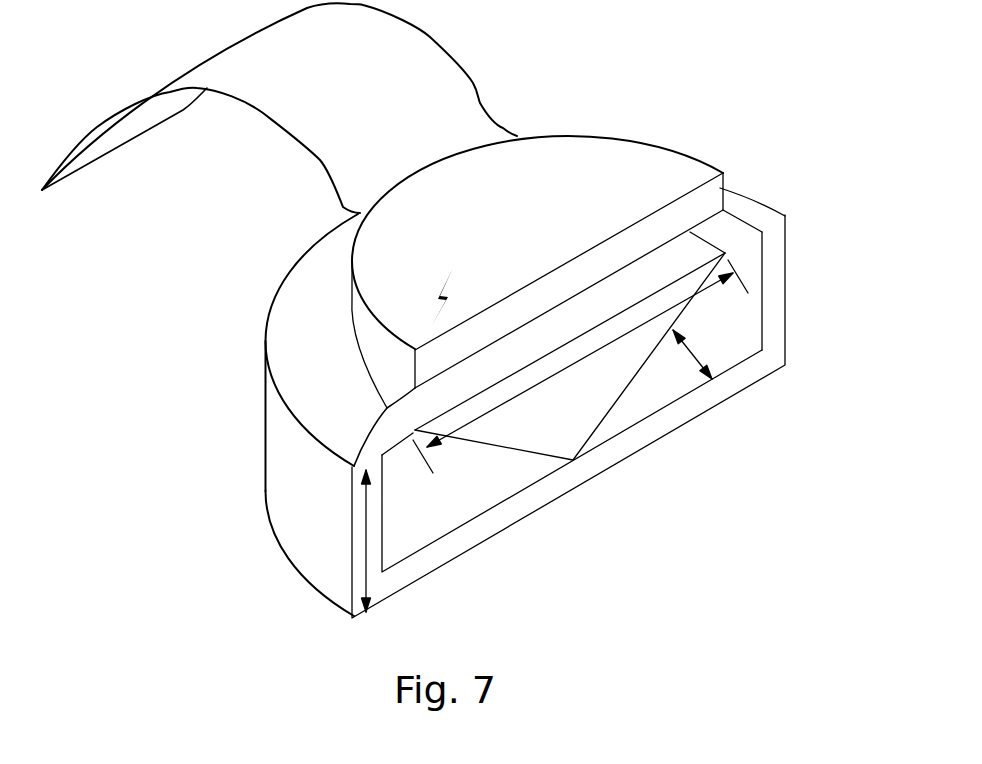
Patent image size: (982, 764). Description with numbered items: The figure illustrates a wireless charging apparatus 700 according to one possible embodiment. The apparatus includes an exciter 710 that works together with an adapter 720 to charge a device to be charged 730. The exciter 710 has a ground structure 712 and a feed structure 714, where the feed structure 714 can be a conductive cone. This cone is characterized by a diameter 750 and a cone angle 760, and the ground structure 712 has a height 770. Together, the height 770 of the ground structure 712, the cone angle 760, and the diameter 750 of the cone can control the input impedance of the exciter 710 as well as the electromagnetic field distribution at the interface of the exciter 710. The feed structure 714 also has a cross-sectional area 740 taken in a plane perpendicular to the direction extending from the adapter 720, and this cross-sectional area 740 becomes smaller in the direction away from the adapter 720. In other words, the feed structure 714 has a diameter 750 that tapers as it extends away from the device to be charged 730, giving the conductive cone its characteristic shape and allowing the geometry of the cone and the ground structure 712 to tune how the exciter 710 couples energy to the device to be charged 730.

The wireless charging apparatus 700 is at (438, 310).
The exciter 710 is at (250, 310).
The ground structure 712 is at (425, 577).
The feed structure 714 is at (497, 440).
The adapter 720 is at (298, 298).
The device to be charged 730 is at (603, 133).
The cross-sectional area 740 is at (668, 258).
The diameter 750 is at (538, 388).
The cone angle 760 is at (690, 343).
The height 770 is at (366, 535).